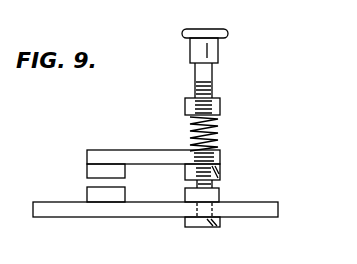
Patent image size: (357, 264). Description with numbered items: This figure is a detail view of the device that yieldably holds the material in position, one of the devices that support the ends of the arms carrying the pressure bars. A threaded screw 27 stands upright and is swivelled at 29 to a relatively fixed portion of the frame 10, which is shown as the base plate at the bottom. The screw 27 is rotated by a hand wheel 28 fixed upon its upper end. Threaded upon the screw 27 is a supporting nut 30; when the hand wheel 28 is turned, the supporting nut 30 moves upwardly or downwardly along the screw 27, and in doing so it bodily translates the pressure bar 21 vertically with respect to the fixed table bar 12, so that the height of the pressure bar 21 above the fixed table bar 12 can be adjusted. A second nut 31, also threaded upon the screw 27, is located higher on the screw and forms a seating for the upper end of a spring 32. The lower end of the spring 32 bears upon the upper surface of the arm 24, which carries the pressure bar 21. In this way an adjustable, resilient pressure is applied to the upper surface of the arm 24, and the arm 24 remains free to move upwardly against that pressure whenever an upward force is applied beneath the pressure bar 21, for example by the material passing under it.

The frame 10 is at (157, 208).
The fixed table bar 12 is at (124, 192).
The pressure bar 21 is at (93, 172).
The arm 24 is at (113, 158).
The threaded screw 27 is at (211, 80).
The hand wheel 28 is at (202, 33).
The swivel 29 is at (214, 196).
The supporting nut 30 is at (222, 172).
The nut 31 is at (216, 100).
The spring 32 is at (212, 133).